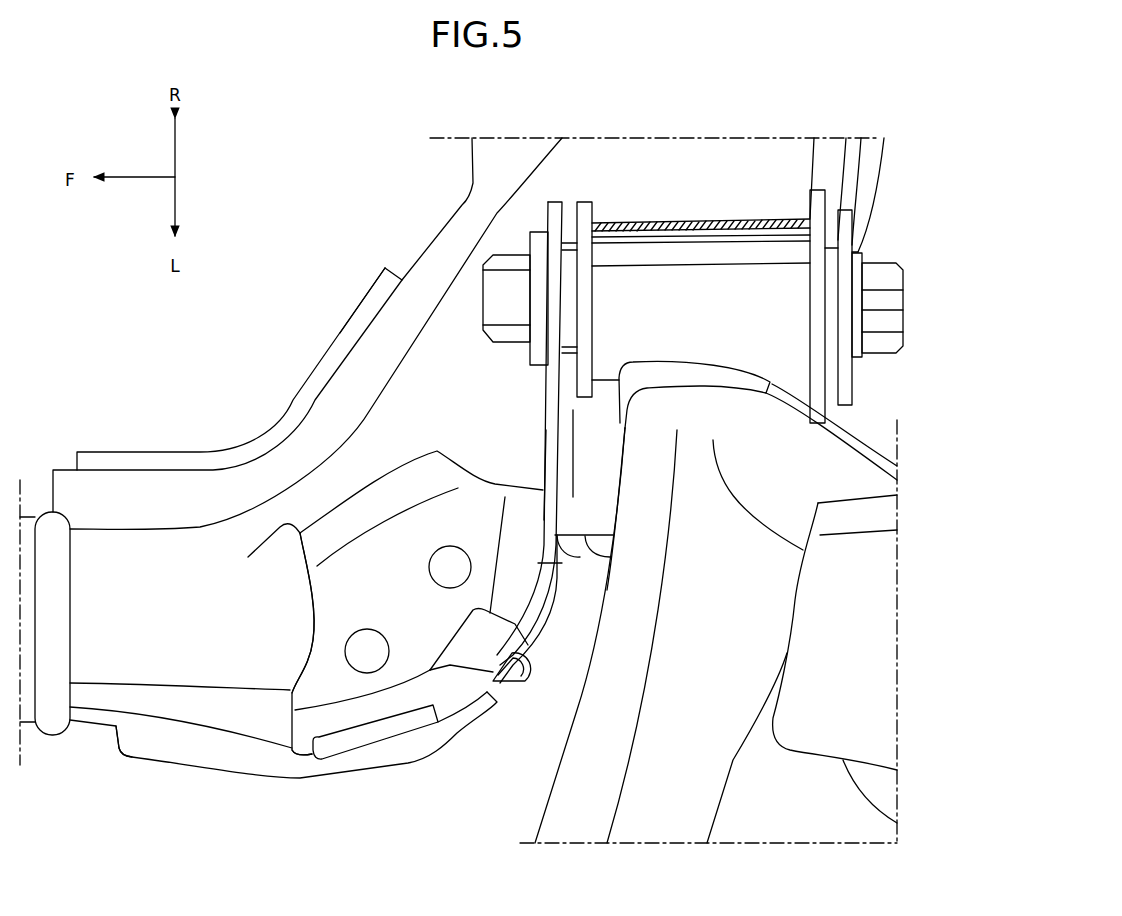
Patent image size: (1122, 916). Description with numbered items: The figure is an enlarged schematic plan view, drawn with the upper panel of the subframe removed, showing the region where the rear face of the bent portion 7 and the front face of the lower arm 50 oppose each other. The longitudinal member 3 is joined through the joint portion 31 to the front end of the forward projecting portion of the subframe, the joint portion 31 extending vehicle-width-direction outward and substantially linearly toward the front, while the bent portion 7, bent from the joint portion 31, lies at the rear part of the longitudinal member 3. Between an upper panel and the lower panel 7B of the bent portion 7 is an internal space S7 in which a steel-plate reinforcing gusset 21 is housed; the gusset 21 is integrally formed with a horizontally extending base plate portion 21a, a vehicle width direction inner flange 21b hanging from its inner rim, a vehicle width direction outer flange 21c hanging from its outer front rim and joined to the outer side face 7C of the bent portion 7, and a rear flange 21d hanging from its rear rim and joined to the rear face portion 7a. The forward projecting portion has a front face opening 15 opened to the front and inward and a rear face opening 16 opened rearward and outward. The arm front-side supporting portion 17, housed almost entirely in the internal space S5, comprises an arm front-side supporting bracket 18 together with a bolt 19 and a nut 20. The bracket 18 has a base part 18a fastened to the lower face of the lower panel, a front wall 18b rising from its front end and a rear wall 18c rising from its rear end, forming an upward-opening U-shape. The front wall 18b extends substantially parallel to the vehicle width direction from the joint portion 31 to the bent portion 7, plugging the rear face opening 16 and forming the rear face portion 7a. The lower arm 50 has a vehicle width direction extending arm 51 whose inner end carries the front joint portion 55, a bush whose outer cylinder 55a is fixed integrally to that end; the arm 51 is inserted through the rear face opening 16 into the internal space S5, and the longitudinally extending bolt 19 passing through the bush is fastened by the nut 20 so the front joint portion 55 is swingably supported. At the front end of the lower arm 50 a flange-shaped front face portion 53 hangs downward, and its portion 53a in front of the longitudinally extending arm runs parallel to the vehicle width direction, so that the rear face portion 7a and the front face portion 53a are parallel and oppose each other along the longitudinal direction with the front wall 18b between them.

The longitudinal member 3 is at (80, 778).
The bent portion 7 is at (408, 767).
The rear face portion 7a is at (557, 587).
The lower panel 7B is at (182, 765).
The outer side face 7C is at (456, 735).
The front face opening 15 is at (389, 194).
The rear face opening 16 is at (756, 417).
The arm front-side supporting portion 17 is at (529, 190).
The arm front-side supporting bracket 18 is at (557, 202).
The base part 18a is at (610, 557).
The front wall 18b is at (544, 406).
The rear wall 18c is at (858, 172).
The bolt 19 is at (483, 307).
The nut 20 is at (905, 335).
The reinforcing gusset 21 is at (287, 688).
The base plate portion 21a is at (318, 612).
The vehicle width direction inner flange 21b is at (248, 557).
The vehicle width direction outer flange 21c is at (310, 756).
The rear flange 21d is at (583, 538).
The joint portion 31 is at (342, 305).
The lower arm 50 is at (547, 818).
The vehicle width direction extending arm 51 is at (562, 772).
The front face portion 53 is at (578, 692).
The front face portion of the vehicle width direction extending arm 53a is at (585, 610).
The front joint portion 55 is at (703, 216).
The outer cylinder 55a is at (740, 224).
The internal space S5 is at (654, 187).
The internal space S7 is at (375, 591).